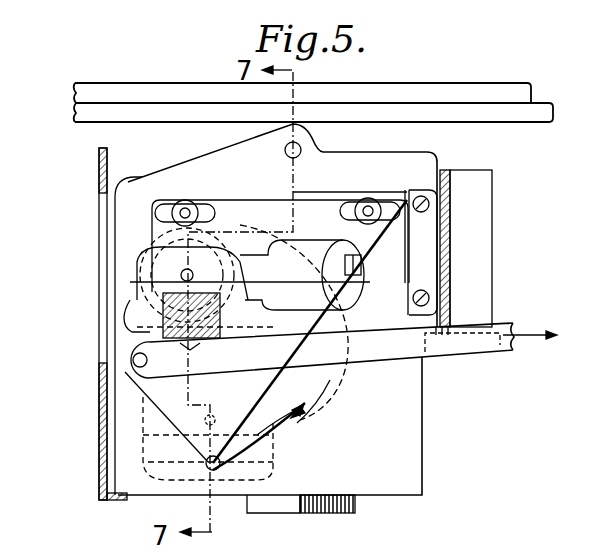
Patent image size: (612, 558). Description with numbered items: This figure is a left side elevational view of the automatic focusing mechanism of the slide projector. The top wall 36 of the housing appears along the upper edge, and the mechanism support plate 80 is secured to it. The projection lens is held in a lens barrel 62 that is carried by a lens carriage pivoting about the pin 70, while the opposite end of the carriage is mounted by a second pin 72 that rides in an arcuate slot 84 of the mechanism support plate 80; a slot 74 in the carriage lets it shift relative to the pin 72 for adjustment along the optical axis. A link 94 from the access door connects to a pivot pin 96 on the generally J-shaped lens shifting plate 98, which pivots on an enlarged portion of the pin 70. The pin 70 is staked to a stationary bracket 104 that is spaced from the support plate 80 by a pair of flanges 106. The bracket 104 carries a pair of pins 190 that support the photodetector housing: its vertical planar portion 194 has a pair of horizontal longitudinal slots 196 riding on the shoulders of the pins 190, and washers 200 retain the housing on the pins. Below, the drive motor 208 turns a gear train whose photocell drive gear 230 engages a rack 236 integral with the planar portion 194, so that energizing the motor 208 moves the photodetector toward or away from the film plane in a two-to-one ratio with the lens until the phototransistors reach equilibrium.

The top wall 36 is at (437, 83).
The lens barrel 62 is at (106, 450).
The pin 70 is at (215, 246).
The second pin 72 is at (206, 468).
The slot 74 is at (231, 410).
The mechanism support plate 80 is at (410, 476).
The arcuate slot 84 is at (333, 377).
The link 94 is at (472, 348).
The pivot pin 96 is at (130, 368).
The lens shifting plate 98 is at (163, 398).
The stationary bracket 104 is at (325, 192).
The flanges 106 is at (428, 279).
The pins 190 is at (185, 205).
The vertical planar portion 194 is at (400, 238).
The longitudinal slots 196 is at (216, 213).
The washers 200 is at (186, 212).
The drive motor 208 is at (288, 512).
The photocell drive gear 230 is at (116, 312).
The rack 236 is at (140, 337).